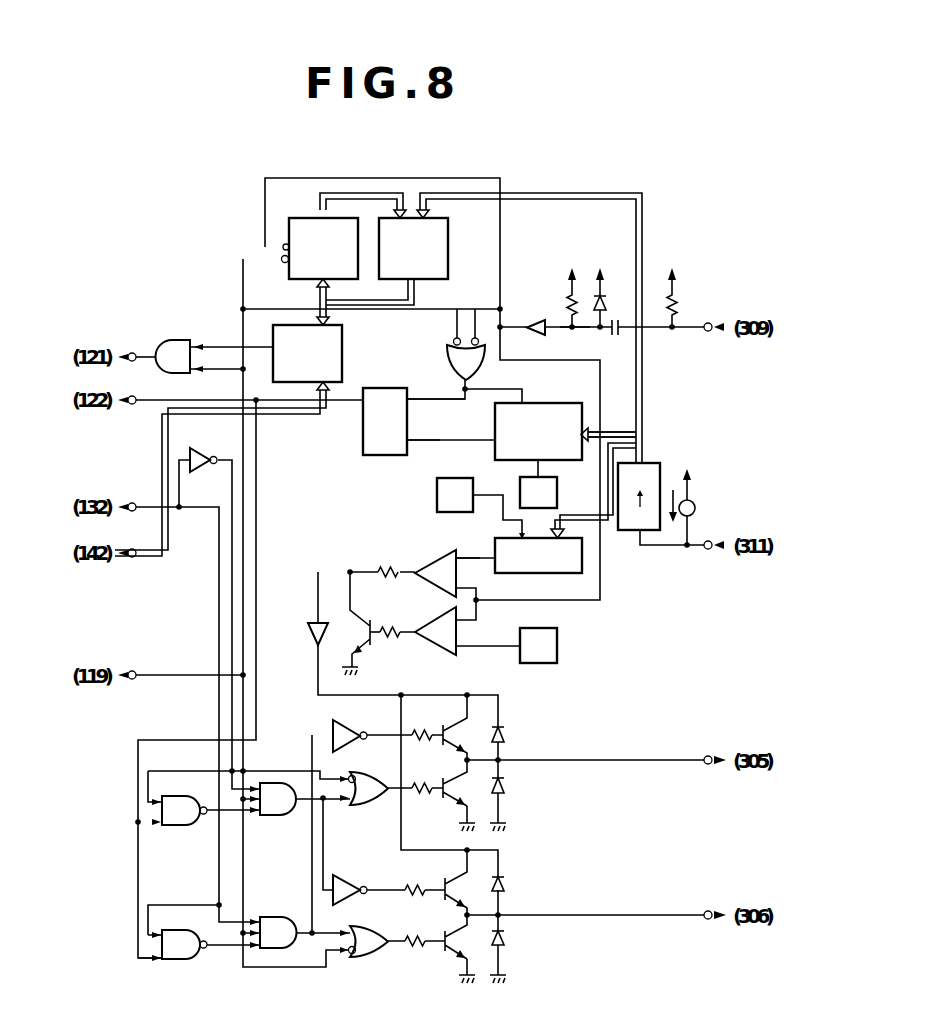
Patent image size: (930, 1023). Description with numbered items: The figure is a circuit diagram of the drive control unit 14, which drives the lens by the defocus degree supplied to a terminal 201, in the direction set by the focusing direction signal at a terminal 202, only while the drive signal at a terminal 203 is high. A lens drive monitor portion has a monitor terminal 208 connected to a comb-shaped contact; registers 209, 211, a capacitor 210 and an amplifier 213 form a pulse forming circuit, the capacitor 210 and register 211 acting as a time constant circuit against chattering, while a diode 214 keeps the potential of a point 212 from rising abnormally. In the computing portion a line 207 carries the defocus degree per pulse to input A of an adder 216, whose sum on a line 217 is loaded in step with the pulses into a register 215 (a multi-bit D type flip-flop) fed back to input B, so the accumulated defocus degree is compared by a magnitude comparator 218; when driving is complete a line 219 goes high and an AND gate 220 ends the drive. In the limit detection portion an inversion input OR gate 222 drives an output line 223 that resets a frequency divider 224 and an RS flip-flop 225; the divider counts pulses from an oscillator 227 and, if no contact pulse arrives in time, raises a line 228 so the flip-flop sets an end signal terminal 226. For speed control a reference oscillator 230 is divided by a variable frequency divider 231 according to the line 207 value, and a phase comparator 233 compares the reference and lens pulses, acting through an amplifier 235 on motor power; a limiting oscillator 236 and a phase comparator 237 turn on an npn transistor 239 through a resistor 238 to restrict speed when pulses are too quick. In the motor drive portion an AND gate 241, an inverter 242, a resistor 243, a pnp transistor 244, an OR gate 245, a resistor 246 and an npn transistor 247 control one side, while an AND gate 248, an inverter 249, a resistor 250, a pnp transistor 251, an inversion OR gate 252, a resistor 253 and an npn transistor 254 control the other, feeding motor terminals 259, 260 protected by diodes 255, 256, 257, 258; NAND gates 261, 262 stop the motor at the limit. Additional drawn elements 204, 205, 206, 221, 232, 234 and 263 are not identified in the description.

The drive control unit 14 is at (596, 163).
The terminal 201 is at (132, 558).
The terminal 202 is at (132, 503).
The terminal 203 is at (133, 671).
The input terminal 204 is at (708, 550).
The current source 205 is at (695, 505).
The D/A converter 206 is at (633, 532).
The line 207 is at (644, 448).
The monitor terminal 208 is at (708, 332).
The register 209 is at (686, 297).
The capacitor 210 is at (616, 336).
The register 211 is at (568, 302).
The point 212 is at (572, 330).
The amplifier 213 is at (531, 322).
The diode 214 is at (604, 298).
The register 215 is at (302, 218).
The adder 216 is at (449, 241).
The line 217 is at (418, 303).
The magnitude comparator 218 is at (343, 350).
The line 219 is at (216, 345).
The AND gate 220 is at (178, 340).
The output terminal 221 is at (132, 352).
The inversion input OR gate 222 is at (448, 364).
The output line 223 is at (424, 400).
The frequency divider 224 is at (547, 403).
The RS flip-flop 225 is at (365, 456).
The end signal terminal 226 is at (135, 406).
The oscillator 227 is at (520, 490).
The line 228 is at (440, 443).
The reference oscillator 230 is at (436, 505).
The variable frequency divider 231 is at (540, 574).
The signal line 232 is at (478, 556).
The phase comparator 233 is at (420, 583).
The resistor 234 is at (386, 560).
The amplifier 235 is at (309, 640).
The limiting oscillator 236 is at (558, 656).
The phase comparator 237 is at (421, 645).
The resistor 238 is at (388, 644).
The npn transistor 239 is at (368, 620).
The AND gate 241 is at (277, 816).
The inverter 242 is at (345, 876).
The resistor 243 is at (416, 877).
The pnp transistor 244 is at (466, 882).
The OR gate 245 is at (375, 805).
The resistor 246 is at (425, 774).
The npn transistor 247 is at (466, 783).
The AND gate 248 is at (277, 917).
The inverter 249 is at (331, 728).
The resistor 250 is at (425, 722).
The pnp transistor 251 is at (466, 727).
The inversion OR gate 252 is at (375, 928).
The resistor 253 is at (414, 928).
The npn transistor 254 is at (466, 937).
The diode 255 is at (508, 740).
The diode 256 is at (508, 788).
The diode 257 is at (508, 884).
The diode 258 is at (508, 940).
The motor terminal 259 is at (707, 756).
The motor terminal 260 is at (707, 911).
The NAND gate 261 is at (178, 826).
The NAND gate 262 is at (176, 962).
The inverter 263 is at (198, 449).